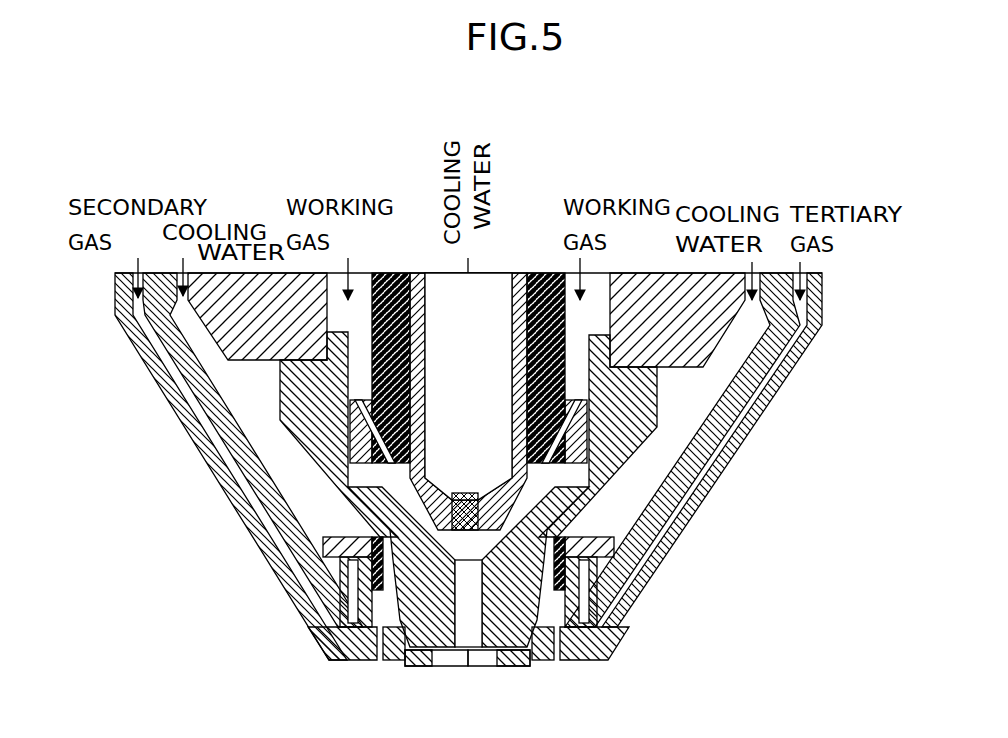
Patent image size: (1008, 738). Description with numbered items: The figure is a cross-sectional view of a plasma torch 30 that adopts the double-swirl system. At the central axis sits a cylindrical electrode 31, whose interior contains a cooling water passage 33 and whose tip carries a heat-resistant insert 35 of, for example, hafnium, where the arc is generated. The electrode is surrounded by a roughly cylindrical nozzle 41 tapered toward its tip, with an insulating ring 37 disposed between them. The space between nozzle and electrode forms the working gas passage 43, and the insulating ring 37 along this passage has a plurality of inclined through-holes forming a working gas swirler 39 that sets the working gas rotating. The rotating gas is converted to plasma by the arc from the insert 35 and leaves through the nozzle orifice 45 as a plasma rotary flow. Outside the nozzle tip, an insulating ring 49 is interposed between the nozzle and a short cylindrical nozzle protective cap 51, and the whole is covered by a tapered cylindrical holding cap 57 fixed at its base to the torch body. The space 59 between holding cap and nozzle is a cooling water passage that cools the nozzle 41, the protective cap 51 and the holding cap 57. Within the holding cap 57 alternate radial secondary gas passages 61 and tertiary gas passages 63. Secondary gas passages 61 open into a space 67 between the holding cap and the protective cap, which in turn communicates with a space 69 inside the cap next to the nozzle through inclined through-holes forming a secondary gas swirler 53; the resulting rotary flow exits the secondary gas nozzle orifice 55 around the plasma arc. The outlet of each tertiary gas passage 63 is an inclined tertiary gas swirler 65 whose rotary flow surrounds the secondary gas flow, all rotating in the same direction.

The plasma torch 30 is at (506, 165).
The electrode 31 is at (416, 273).
The cooling water passage 33 is at (498, 272).
The heat-resistant insert 35 is at (466, 493).
The insulating ring 37 is at (540, 273).
The working gas swirler 39 is at (592, 468).
The nozzle 41 is at (622, 428).
The working gas passage 43 is at (395, 343).
The nozzle orifice 45 is at (468, 620).
The insulating ring 49 is at (607, 583).
The nozzle protective cap 51 is at (520, 660).
The secondary gas swirler 53 is at (358, 645).
The secondary gas nozzle orifice 55 is at (497, 664).
The holding cap 57 is at (763, 417).
The cooling water passage 59 is at (717, 370).
The secondary gas passage 61 is at (222, 449).
The tertiary gas passage 63 is at (712, 453).
The tertiary gas swirler 65 is at (575, 655).
The space 67 is at (348, 606).
The space 69 is at (400, 645).